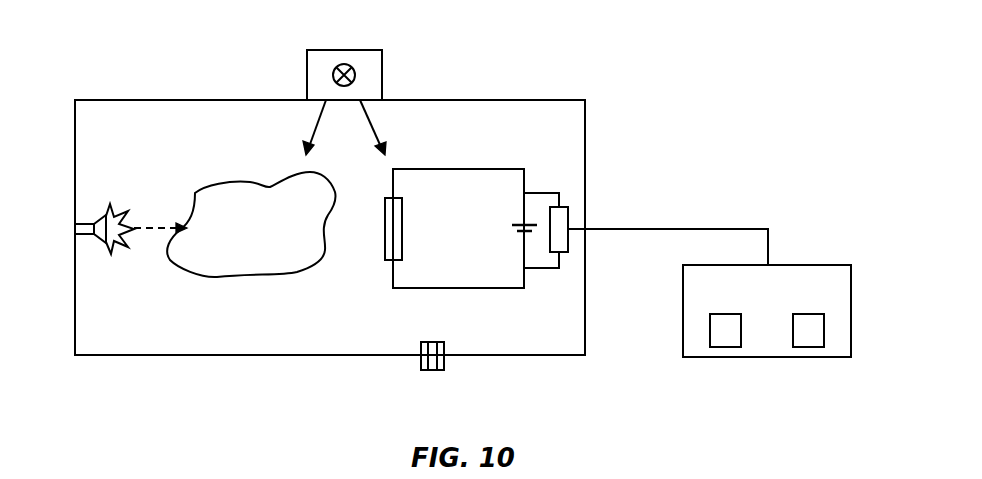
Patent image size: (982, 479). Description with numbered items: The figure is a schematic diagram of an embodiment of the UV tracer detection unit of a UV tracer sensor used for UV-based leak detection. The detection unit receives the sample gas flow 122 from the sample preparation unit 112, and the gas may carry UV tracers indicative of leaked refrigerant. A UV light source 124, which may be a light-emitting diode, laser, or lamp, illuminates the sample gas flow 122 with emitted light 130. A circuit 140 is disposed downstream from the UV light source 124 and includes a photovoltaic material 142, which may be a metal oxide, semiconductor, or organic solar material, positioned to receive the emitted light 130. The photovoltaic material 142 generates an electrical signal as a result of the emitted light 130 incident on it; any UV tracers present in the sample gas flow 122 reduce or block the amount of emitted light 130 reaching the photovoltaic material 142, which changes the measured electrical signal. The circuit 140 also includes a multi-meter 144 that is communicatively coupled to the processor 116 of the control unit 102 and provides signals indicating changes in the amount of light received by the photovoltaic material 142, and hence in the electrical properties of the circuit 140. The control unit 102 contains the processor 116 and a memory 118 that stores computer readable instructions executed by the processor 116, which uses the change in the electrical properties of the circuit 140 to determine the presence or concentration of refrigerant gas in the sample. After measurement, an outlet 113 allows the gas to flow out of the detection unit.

The control unit 102 is at (851, 307).
The sample preparation unit 112 is at (345, 48).
The outlet 113 is at (433, 370).
The processor 116 is at (724, 347).
The memory 118 is at (808, 347).
The sample gas flow 122 is at (373, 128).
The UV light source 124 is at (82, 223).
The emitted light 130 is at (155, 222).
The circuit 140 is at (460, 169).
The photovoltaic material 142 is at (384, 229).
The multi-meter 144 is at (568, 205).